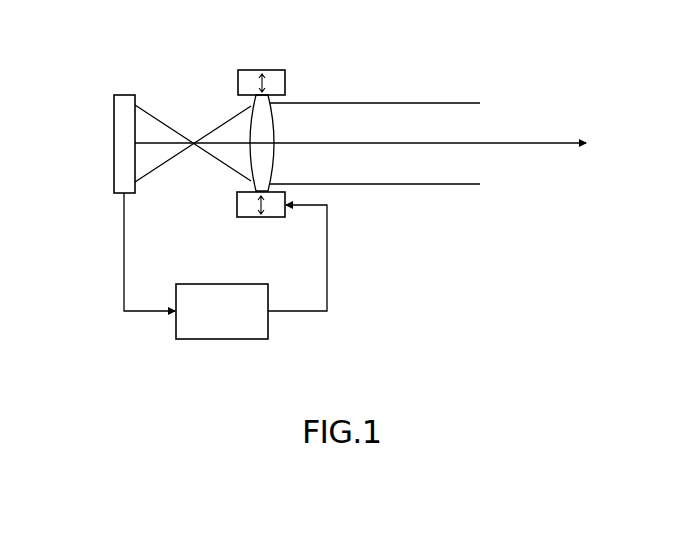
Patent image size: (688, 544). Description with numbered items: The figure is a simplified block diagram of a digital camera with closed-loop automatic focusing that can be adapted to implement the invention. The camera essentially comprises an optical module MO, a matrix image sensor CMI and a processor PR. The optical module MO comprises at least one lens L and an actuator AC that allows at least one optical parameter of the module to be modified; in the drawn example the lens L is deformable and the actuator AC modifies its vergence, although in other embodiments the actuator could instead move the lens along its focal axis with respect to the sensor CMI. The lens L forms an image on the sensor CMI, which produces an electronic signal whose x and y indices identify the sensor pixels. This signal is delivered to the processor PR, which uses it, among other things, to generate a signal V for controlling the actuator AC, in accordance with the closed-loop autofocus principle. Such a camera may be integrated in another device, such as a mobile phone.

The matrix image sensor CMI is at (124, 95).
The optical module MO is at (285, 133).
The lens L is at (274, 125).
The actuator AC is at (255, 218).
The signal for controlling the actuator V is at (327, 232).
The processor PR is at (203, 339).